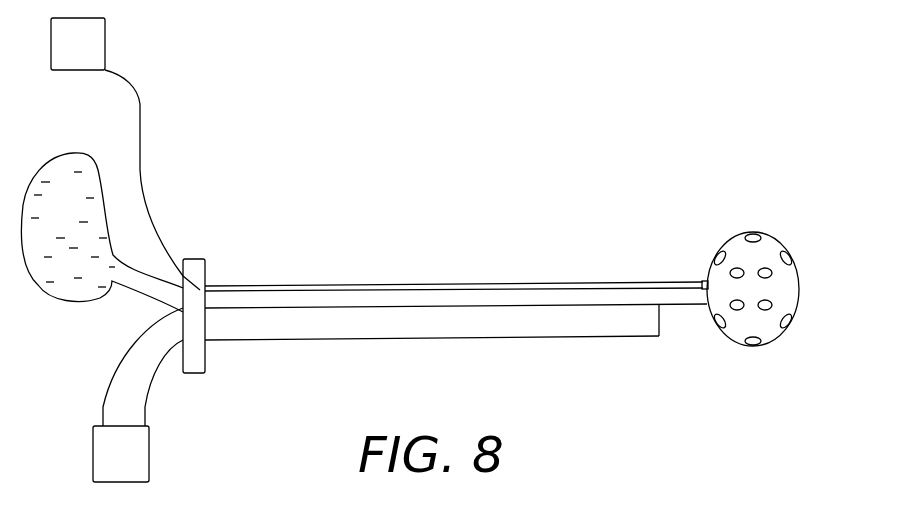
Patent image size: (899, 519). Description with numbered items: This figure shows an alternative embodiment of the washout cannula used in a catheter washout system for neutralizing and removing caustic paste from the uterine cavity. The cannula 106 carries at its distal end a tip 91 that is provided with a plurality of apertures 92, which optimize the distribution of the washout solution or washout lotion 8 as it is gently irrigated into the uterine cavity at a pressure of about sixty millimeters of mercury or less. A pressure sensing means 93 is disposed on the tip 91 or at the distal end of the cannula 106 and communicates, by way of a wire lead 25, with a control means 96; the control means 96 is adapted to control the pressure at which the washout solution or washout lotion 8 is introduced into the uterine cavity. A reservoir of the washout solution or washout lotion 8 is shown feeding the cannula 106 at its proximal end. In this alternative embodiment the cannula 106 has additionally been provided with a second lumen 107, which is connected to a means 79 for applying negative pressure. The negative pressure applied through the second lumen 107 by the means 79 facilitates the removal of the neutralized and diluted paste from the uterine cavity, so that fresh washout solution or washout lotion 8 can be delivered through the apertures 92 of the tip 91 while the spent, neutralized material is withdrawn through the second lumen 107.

The control means 96 is at (90, 59).
The wire lead 25 is at (140, 133).
The washout solution or washout lotion 8 is at (72, 219).
The cannula 106 is at (345, 278).
The second lumen 107 is at (648, 332).
The pressure sensing means 93 is at (703, 282).
The tip 91 is at (777, 338).
The apertures 92 is at (766, 268).
The means for applying negative pressure 79 is at (149, 455).